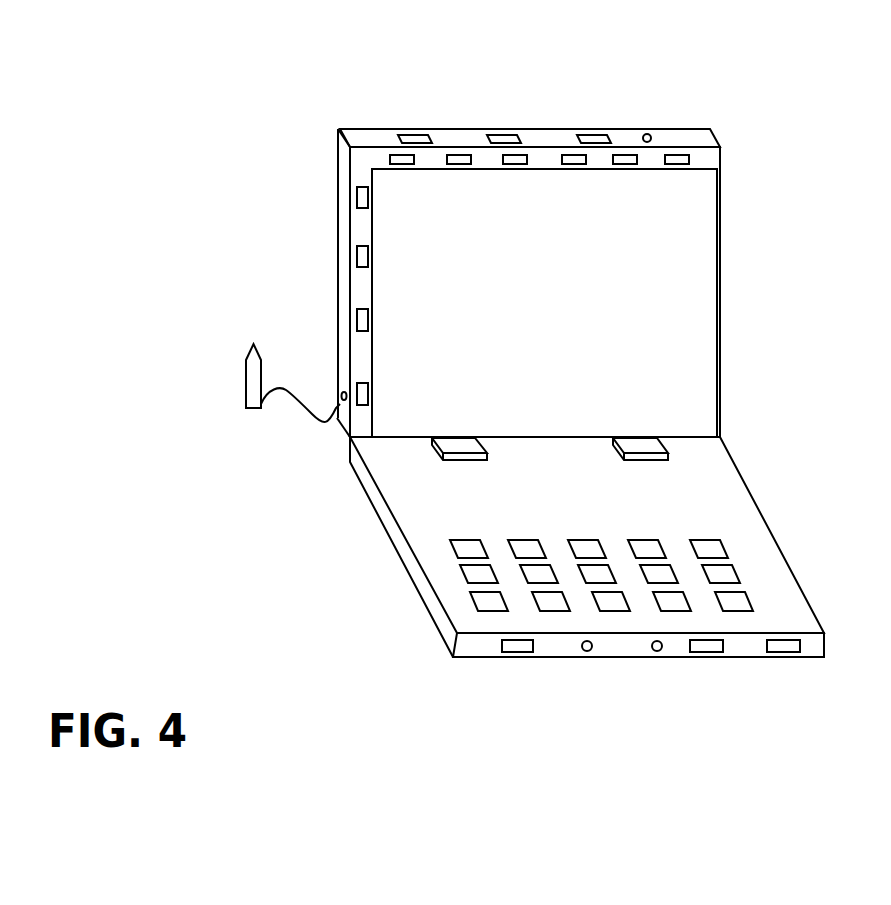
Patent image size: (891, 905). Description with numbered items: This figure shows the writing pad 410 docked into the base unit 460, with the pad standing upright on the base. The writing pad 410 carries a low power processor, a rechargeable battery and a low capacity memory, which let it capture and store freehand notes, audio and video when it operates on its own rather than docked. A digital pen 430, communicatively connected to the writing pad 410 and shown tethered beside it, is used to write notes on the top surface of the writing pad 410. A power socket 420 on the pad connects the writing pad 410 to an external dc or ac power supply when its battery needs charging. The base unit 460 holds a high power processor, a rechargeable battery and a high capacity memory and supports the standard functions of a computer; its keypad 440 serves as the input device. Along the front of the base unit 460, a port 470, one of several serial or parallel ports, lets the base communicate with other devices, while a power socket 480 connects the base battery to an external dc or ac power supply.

The writing pad 410 is at (529, 294).
The power socket 420 is at (656, 136).
The digital pen 430 is at (238, 393).
The keypad 440 is at (733, 546).
The base unit 460 is at (580, 537).
The port 470 is at (489, 645).
The power socket 480 is at (642, 645).